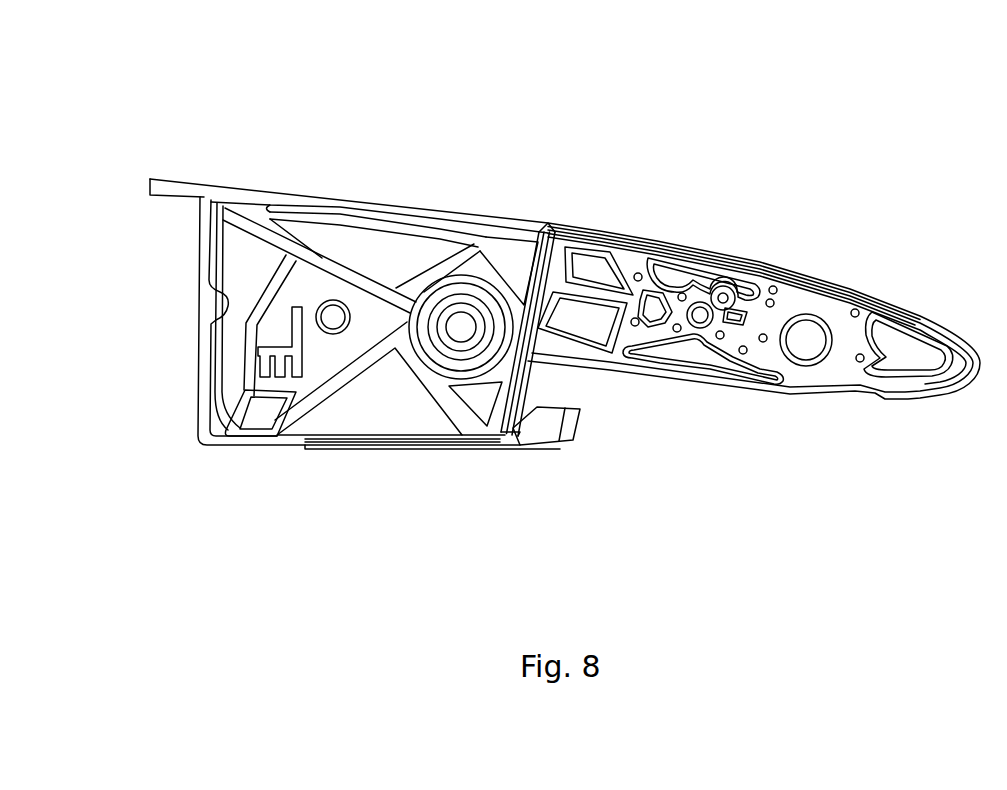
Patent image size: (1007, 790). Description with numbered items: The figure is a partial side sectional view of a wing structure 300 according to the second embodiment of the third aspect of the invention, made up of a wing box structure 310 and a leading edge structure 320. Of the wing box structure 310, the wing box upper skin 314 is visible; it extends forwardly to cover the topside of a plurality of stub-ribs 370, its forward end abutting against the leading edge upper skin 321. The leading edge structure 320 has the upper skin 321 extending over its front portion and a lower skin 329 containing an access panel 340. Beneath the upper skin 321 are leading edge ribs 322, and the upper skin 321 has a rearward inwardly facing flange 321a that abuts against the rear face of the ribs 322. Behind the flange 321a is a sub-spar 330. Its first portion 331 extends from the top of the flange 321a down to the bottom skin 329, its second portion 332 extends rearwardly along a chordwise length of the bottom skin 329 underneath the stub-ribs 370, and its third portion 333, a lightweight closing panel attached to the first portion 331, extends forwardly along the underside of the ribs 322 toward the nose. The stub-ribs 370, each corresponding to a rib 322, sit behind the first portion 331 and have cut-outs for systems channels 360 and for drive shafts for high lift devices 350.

The wing structure 300 is at (833, 136).
The wing box structure 310 is at (158, 140).
The wing box upper skin 314 is at (261, 186).
The stub-ribs 370 is at (400, 250).
The drive shafts for high lift devices 350 is at (455, 333).
The systems channels 360 is at (250, 347).
The lower skin 329 is at (323, 458).
The access panel 340 is at (380, 462).
The second portion of the sub-spar 332 is at (480, 448).
The sub-spar 330 is at (523, 450).
The first portion of the sub-spar 331 is at (557, 443).
The rearward inwardly facing flange 321a is at (575, 229).
The upper skin 321 is at (862, 283).
The leading edge structure 320 is at (934, 430).
The leading edge ribs 322 is at (808, 350).
The third portion of the sub-spar 333 is at (720, 397).